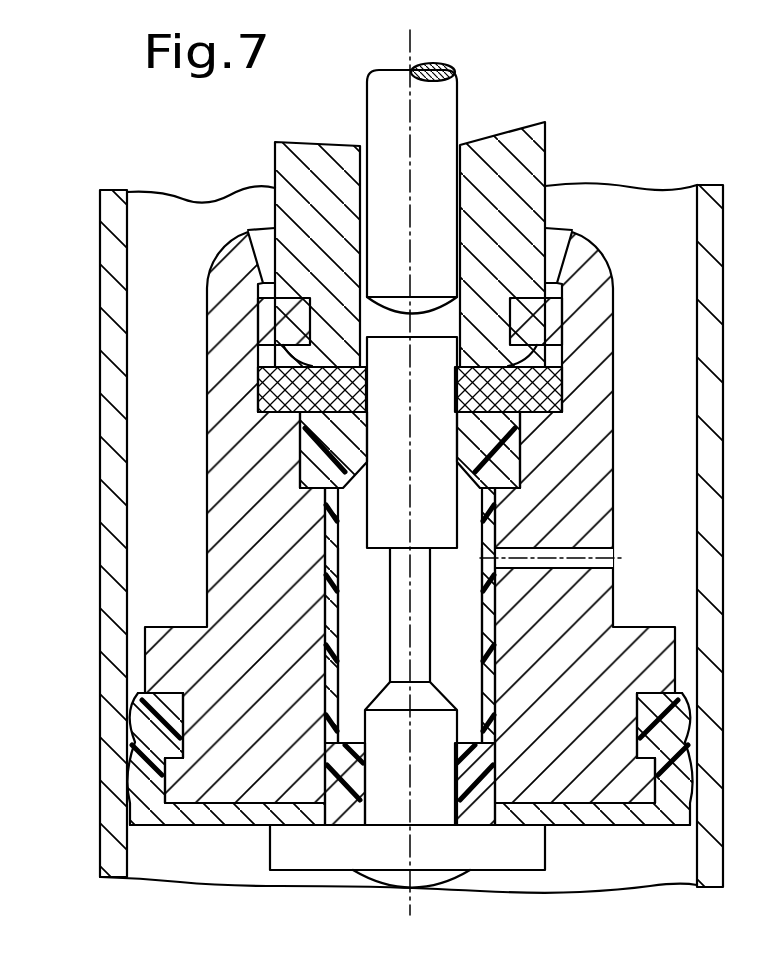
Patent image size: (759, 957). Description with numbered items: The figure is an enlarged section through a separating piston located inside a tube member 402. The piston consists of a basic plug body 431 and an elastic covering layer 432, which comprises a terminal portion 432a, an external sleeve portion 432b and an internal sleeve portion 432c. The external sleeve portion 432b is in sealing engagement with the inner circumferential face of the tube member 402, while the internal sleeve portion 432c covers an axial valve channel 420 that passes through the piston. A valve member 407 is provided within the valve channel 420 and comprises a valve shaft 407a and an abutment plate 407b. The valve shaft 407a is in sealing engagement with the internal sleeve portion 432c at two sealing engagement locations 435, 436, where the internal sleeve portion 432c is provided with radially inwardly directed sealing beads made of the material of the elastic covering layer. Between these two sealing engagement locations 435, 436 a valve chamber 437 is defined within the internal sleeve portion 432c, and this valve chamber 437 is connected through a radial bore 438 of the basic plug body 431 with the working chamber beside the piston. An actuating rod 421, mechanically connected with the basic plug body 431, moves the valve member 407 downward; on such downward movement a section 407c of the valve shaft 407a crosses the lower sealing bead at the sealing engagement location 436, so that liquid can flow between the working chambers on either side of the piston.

The tube member 402 is at (117, 190).
The actuating rod 421 is at (449, 101).
The valve member 407 is at (440, 424).
The valve shaft 407a is at (376, 432).
The abutment plate 407b is at (467, 848).
The section of the valve shaft 407c is at (400, 578).
The sealing engagement location 435 is at (330, 450).
The basic plug body 431 is at (235, 508).
The radial bore 438 is at (580, 552).
The valve chamber 437 is at (360, 617).
The axial valve channel 420 is at (330, 655).
The elastic covering layer 432 is at (160, 828).
The terminal portion 432a is at (224, 826).
The external sleeve portion 432b is at (150, 753).
The internal sleeve portion 432c is at (330, 690).
The sealing engagement location 436 is at (327, 826).